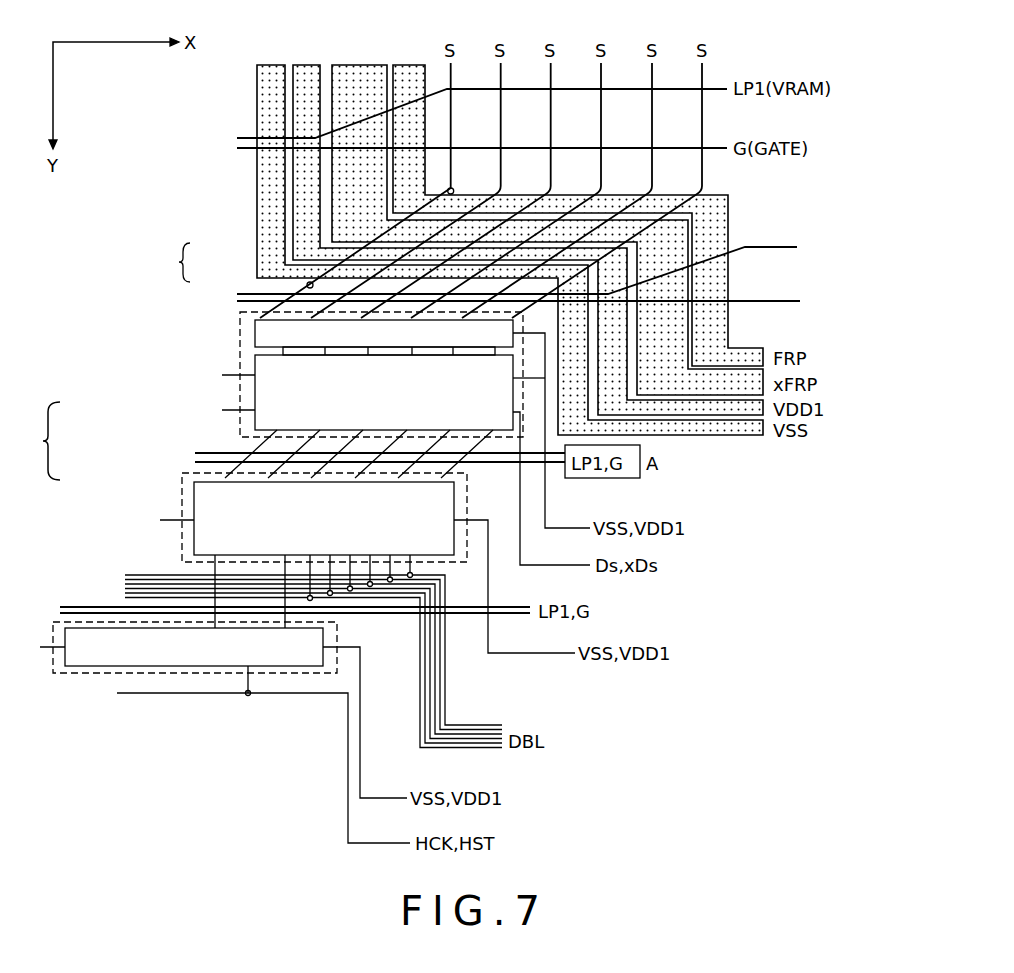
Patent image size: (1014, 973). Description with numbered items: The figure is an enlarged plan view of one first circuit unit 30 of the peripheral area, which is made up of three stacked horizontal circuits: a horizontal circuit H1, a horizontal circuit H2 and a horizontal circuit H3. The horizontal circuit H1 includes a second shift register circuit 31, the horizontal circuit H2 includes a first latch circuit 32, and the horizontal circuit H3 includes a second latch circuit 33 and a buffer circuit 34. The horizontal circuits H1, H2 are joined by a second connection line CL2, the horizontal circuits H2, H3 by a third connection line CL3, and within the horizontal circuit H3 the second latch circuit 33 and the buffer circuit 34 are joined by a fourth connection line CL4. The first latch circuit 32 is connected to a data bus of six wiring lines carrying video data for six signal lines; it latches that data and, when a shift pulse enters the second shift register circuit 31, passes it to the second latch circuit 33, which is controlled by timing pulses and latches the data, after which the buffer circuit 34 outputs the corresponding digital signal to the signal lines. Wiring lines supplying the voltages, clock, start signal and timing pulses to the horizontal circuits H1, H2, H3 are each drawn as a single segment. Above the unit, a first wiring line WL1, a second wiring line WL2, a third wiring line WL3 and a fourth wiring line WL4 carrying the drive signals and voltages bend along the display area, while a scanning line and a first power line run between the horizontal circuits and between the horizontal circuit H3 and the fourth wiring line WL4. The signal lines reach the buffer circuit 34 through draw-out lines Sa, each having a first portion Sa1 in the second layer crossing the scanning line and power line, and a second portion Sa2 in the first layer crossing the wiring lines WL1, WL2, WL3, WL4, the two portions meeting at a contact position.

The first circuit unit 30 is at (39, 441).
The second shift register circuit 31 is at (100, 673).
The first latch circuit 32 is at (183, 508).
The second latch circuit 33 is at (344, 375).
The buffer circuit 34 is at (243, 320).
The horizontal circuit H1 is at (225, 652).
The horizontal circuit H2 is at (321, 542).
The horizontal circuit H3 is at (295, 374).
The second connection line CL2 is at (215, 575).
The third connection line CL3 is at (258, 448).
The fourth connection line CL4 is at (266, 352).
The first wiring line WL1 is at (357, 167).
The second wiring line WL2 is at (407, 190).
The third wiring line WL3 is at (307, 205).
The fourth wiring line WL4 is at (267, 222).
The draw-out lines Sa is at (223, 270).
The first portion Sa1 is at (262, 300).
The second portion Sa2 is at (292, 258).